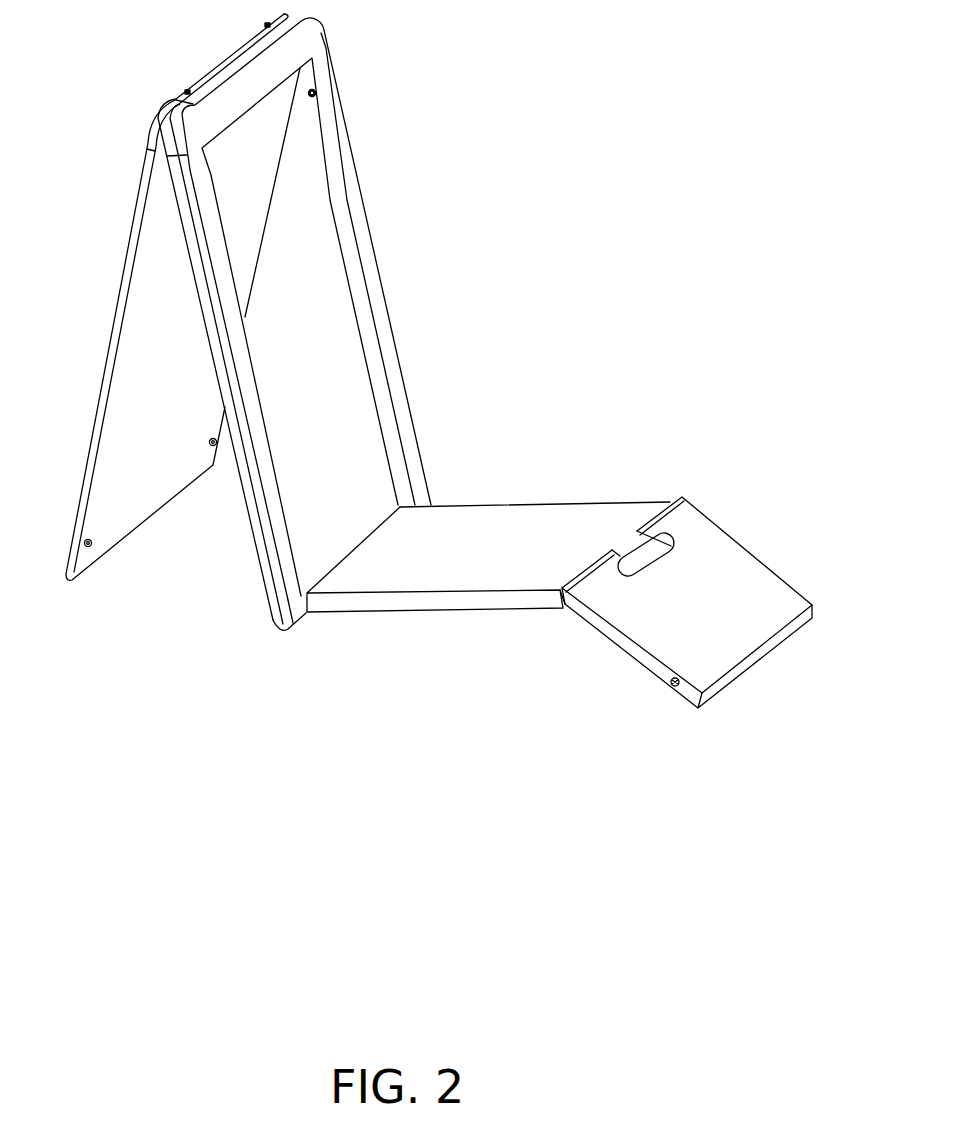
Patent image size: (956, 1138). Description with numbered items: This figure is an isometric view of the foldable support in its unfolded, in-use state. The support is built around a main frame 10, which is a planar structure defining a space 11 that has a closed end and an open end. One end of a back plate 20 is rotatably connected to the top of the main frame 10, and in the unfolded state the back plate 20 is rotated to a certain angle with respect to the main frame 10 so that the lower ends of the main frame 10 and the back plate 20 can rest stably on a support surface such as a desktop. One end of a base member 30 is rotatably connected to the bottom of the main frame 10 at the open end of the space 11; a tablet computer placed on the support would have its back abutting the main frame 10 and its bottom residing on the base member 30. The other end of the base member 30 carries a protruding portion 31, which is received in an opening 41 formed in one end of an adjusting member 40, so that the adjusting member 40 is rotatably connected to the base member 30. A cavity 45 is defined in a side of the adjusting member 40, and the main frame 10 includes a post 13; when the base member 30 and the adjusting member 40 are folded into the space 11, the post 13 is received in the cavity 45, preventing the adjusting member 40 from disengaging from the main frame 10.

The main frame 10 is at (245, 85).
The space 11 is at (308, 208).
The post 13 is at (318, 93).
The back plate 20 is at (158, 277).
The base member 30 is at (490, 522).
The protruding portion 31 is at (630, 543).
The adjusting member 40 is at (680, 523).
The opening 41 is at (668, 567).
The cavity 45 is at (670, 688).